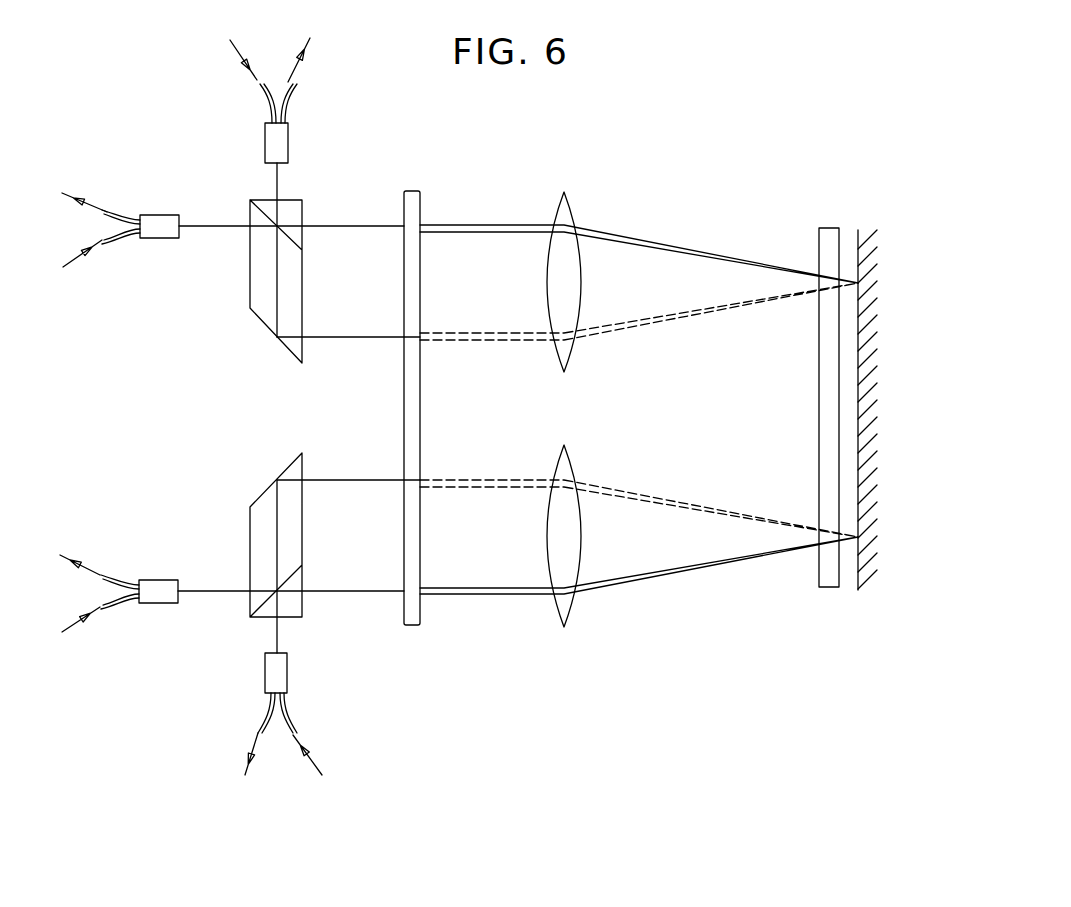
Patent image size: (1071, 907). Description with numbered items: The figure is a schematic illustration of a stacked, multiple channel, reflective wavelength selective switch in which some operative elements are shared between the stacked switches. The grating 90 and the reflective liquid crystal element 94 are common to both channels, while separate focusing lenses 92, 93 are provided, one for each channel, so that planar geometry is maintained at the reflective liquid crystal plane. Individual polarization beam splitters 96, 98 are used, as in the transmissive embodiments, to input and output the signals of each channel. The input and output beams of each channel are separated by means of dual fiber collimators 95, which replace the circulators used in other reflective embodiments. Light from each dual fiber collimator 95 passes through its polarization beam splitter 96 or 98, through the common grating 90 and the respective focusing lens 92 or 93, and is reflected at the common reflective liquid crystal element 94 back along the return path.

The grating 90 is at (413, 624).
The focusing lens 92 is at (562, 602).
The focusing lens 93 is at (563, 205).
The reflective liquid crystal element 94 is at (830, 577).
The dual fiber collimator 95 is at (267, 152).
The polarization beam splitter 96 is at (260, 532).
The polarization beam splitter 98 is at (262, 288).